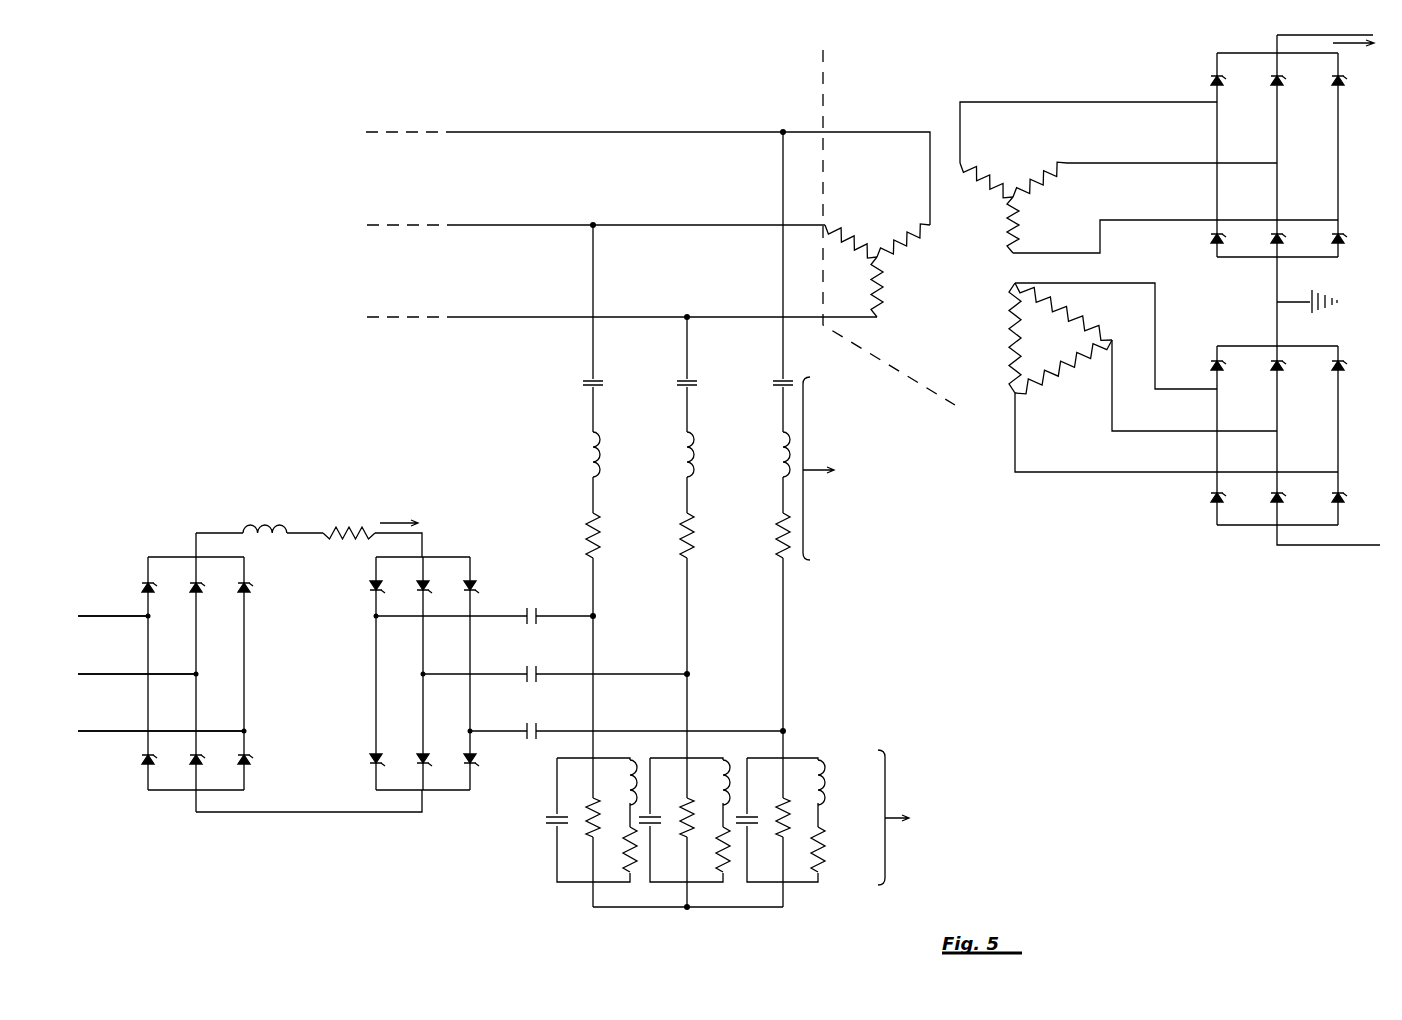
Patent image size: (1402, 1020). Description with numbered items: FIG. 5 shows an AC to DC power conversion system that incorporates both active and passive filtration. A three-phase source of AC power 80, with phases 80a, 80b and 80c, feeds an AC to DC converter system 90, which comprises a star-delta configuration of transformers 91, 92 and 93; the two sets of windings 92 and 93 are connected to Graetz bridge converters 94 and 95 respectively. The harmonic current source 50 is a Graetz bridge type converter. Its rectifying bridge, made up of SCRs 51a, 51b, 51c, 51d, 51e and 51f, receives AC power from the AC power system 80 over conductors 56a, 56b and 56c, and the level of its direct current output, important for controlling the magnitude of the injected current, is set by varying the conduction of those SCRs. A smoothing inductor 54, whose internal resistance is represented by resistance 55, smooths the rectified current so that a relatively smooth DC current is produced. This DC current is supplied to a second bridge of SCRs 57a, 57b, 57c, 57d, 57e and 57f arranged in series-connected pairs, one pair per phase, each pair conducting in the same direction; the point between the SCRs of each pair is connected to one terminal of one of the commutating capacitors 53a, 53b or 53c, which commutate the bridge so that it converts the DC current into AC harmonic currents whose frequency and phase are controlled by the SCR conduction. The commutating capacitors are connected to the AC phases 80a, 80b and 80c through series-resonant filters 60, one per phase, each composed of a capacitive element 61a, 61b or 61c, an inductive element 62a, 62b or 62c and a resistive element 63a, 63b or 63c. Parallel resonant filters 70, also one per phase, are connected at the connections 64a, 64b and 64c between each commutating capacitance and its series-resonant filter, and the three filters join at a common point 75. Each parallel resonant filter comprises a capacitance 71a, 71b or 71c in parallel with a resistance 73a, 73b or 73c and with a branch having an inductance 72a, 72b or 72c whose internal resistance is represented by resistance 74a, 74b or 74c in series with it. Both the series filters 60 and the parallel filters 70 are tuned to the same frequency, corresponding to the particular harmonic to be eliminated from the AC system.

The harmonic current source 50 is at (318, 640).
The SCR 51a is at (164, 576).
The SCR 51b is at (164, 773).
The SCR 51c is at (211, 576).
The SCR 51d is at (212, 773).
The SCR 51e is at (260, 576).
The SCR 51f is at (258, 773).
The commutating capacitor 53a is at (560, 626).
The commutating capacitor 53b is at (607, 681).
The commutating capacitor 53c is at (655, 738).
The smoothing inductor 54 is at (242, 523).
The internal resistance 55 is at (338, 526).
The conductor 56a is at (113, 627).
The conductor 56b is at (137, 683).
The conductor 56c is at (161, 739).
The SCR 57a is at (391, 576).
The SCR 57b is at (391, 772).
The SCR 57c is at (438, 576).
The SCR 57d is at (439, 772).
The SCR 57e is at (485, 576).
The SCR 57f is at (483, 772).
The series resonant passive filter 60 is at (955, 502).
The capacitive element 61a is at (574, 381).
The capacitive element 61b is at (669, 381).
The capacitive element 61c is at (765, 381).
The inductive element 62a is at (575, 454).
The inductive element 62b is at (670, 454).
The inductive element 62c is at (764, 454).
The resistive element 63a is at (572, 535).
The resistive element 63b is at (668, 535).
The resistive element 63c is at (763, 535).
The connection 64a is at (612, 616).
The connection 64b is at (705, 676).
The connection 64c is at (800, 733).
The parallel resonant filter 70 is at (1037, 853).
The capacitance 71a is at (545, 809).
The capacitance 71b is at (665, 809).
The capacitance 71c is at (759, 809).
The inductance 72a is at (636, 762).
The inductance 72b is at (733, 754).
The inductance 72c is at (824, 768).
The resistance 73a is at (591, 810).
The resistance 73b is at (688, 808).
The resistance 73c is at (784, 808).
The internal resistance 74a is at (633, 868).
The internal resistance 74b is at (725, 868).
The internal resistance 74c is at (819, 868).
The neutral point 75 is at (688, 908).
The source of AC power 80 is at (320, 237).
The phase 80a is at (596, 235).
The phase 80b is at (622, 328).
The phase 80c is at (648, 177).
The AC to DC converter system 90 is at (823, 73).
The transformer 91 is at (880, 260).
The transformer 92 is at (1011, 199).
The transformer 93 is at (1010, 345).
The Graetz bridge converter 94 is at (1318, 140).
The Graetz bridge converter 95 is at (1322, 423).